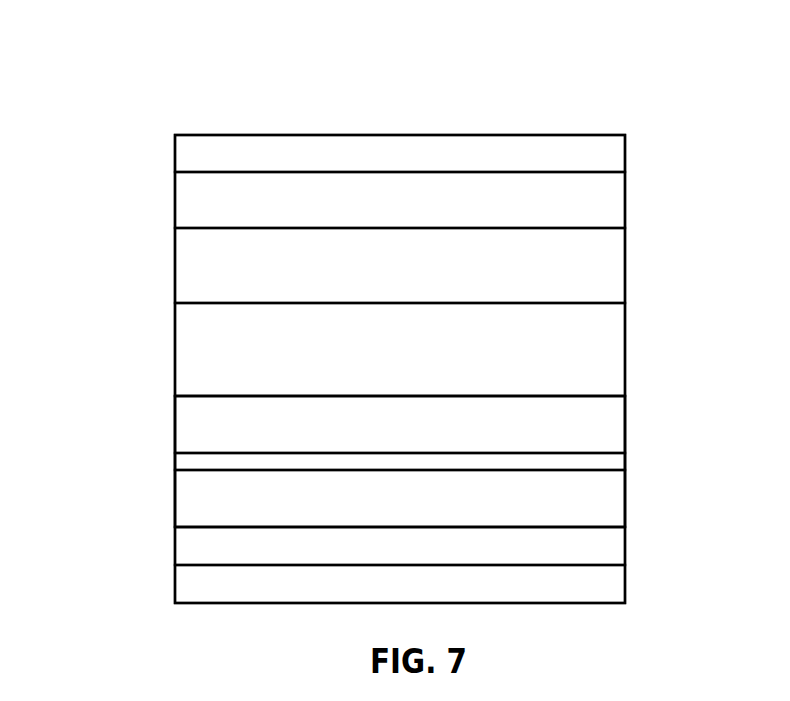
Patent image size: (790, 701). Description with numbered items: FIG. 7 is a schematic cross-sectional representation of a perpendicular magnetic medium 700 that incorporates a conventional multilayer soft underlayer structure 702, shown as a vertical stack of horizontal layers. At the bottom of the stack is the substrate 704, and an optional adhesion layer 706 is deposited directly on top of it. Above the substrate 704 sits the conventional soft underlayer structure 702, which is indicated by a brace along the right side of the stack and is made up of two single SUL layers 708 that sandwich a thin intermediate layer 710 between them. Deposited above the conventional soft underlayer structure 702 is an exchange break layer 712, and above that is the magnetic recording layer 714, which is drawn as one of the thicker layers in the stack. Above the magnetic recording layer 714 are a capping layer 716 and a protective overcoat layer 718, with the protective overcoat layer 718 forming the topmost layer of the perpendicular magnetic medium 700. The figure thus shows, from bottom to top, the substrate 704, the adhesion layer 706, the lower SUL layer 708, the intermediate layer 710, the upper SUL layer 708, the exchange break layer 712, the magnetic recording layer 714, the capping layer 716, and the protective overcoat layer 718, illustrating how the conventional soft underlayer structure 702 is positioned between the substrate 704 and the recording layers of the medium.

The perpendicular magnetic medium 700 is at (166, 92).
The conventional soft underlayer structure 702 is at (638, 397).
The substrate 704 is at (421, 596).
The adhesion layer 706 is at (421, 558).
The single SUL layer 708 is at (421, 436).
The intermediate layer 710 is at (187, 462).
The exchange break layer 712 is at (421, 362).
The magnetic recording layer 714 is at (421, 278).
The capping layer 716 is at (421, 212).
The protective overcoat layer 718 is at (421, 164).